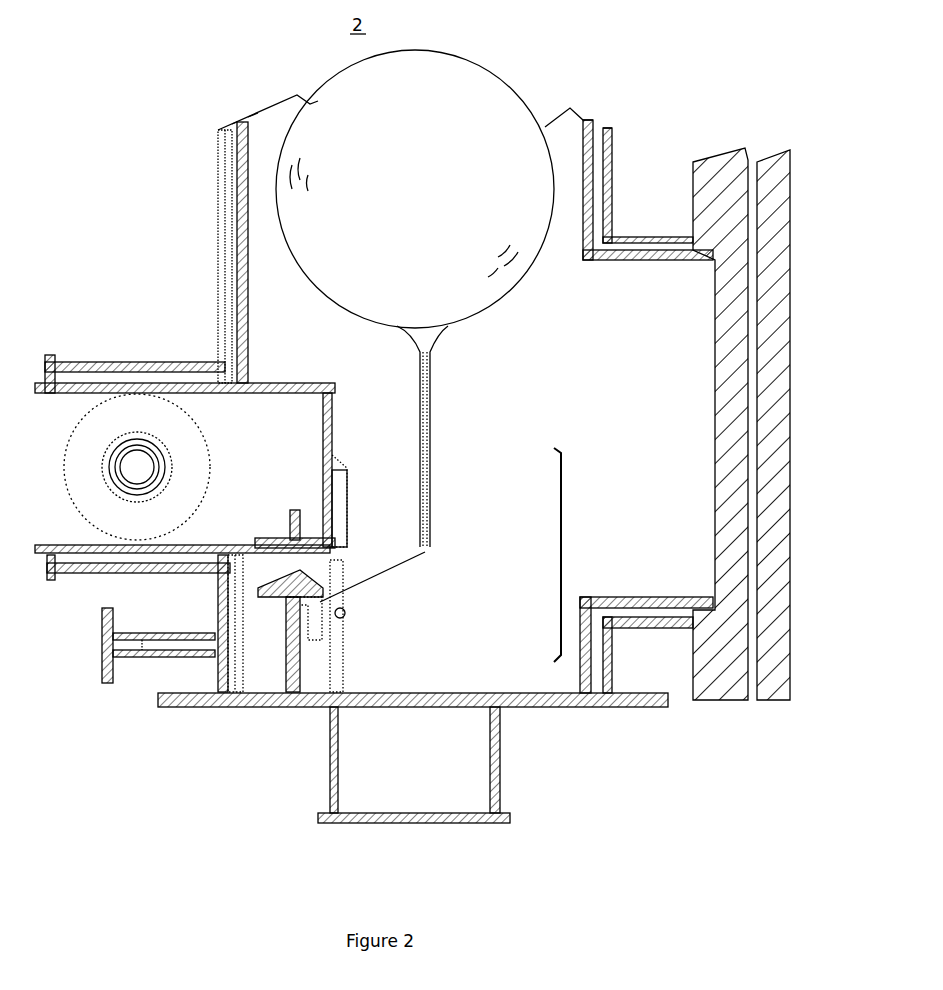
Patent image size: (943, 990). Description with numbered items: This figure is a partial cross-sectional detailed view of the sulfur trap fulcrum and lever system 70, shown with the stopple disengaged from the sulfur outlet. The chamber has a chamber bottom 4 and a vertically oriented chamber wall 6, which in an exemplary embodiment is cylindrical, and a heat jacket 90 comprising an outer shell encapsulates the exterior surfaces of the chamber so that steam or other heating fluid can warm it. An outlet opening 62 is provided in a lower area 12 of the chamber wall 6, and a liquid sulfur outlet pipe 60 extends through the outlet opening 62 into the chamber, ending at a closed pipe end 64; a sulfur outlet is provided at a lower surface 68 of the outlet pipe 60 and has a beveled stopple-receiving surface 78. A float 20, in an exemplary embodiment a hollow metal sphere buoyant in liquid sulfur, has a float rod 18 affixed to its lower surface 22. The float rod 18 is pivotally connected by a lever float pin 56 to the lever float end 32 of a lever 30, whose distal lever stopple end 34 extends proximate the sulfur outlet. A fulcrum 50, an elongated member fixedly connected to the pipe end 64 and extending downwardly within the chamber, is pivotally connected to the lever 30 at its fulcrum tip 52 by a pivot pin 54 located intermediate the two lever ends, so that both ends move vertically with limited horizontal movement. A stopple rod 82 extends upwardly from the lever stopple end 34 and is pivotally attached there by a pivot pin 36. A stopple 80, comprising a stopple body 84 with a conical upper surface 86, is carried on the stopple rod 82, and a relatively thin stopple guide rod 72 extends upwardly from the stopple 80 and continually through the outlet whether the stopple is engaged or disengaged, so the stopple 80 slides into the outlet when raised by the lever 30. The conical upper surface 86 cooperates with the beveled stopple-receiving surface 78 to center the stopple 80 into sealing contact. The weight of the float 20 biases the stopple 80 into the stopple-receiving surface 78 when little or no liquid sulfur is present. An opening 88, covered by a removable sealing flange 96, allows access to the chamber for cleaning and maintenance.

The chamber bottom 4 is at (585, 702).
The chamber wall 6 is at (603, 122).
The lower area 12 is at (612, 672).
The float rod 18 is at (435, 475).
The float 20 is at (500, 76).
The lower surface 22 is at (445, 326).
The lever 30 is at (400, 583).
The lever float end 32 is at (427, 550).
The lever stopple end 34 is at (298, 640).
The pivot pin 36 is at (307, 622).
The fulcrum 50 is at (325, 400).
The fulcrum tip 52 is at (338, 620).
The pivot pin 54 is at (339, 613).
The lever float pin 56 is at (430, 553).
The liquid sulfur outlet pipe 60 is at (85, 383).
The outlet opening 62 is at (337, 490).
The closed pipe end 64 is at (338, 465).
The lower surface 68 is at (180, 562).
The fulcrum and lever system 70 is at (561, 540).
The stopple guide rod 72 is at (292, 515).
The stopple-receiving surface 78 is at (290, 576).
The stopple 80 is at (255, 635).
The stopple rod 82 is at (228, 578).
The stopple body 84 is at (217, 663).
The conical upper surface 86 is at (217, 655).
The opening 88 is at (620, 387).
The heat jacket 90 is at (220, 206).
The removable sealing flange 96 is at (772, 335).